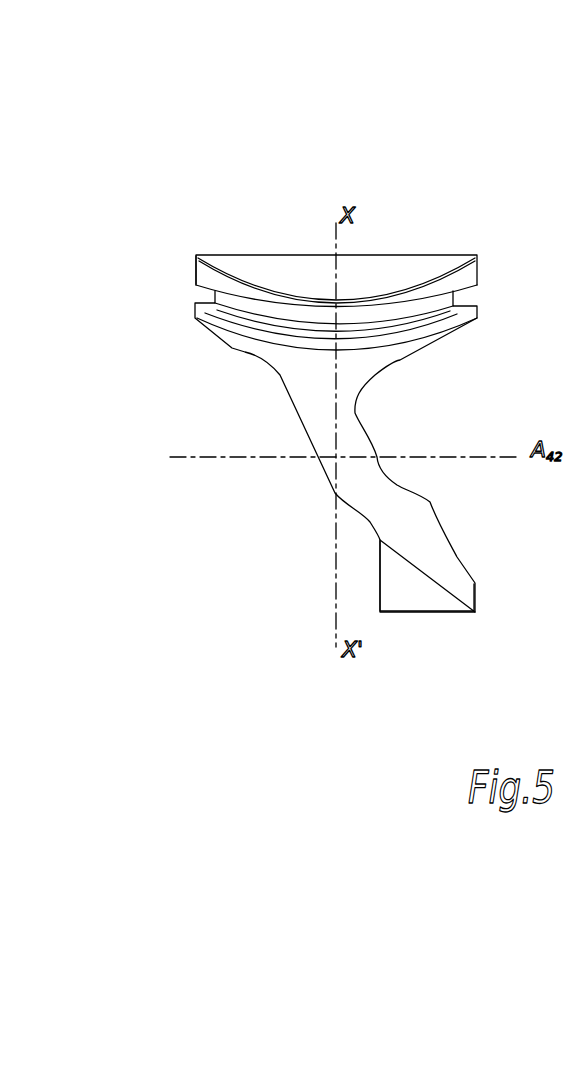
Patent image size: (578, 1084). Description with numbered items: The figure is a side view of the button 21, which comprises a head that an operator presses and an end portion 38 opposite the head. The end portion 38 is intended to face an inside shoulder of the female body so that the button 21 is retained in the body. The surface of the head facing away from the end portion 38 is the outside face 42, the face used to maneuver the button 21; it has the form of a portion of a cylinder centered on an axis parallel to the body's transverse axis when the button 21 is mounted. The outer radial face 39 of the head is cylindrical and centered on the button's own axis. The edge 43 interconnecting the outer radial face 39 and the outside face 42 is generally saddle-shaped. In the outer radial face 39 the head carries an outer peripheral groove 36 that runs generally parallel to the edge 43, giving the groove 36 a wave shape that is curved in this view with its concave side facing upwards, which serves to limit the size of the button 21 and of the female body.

The button 21 is at (218, 176).
The outside face 42 is at (389, 274).
The outer radial face 39 is at (197, 273).
The edge 43 is at (277, 284).
The outer peripheral groove 36 is at (445, 312).
The end portion 38 is at (423, 588).